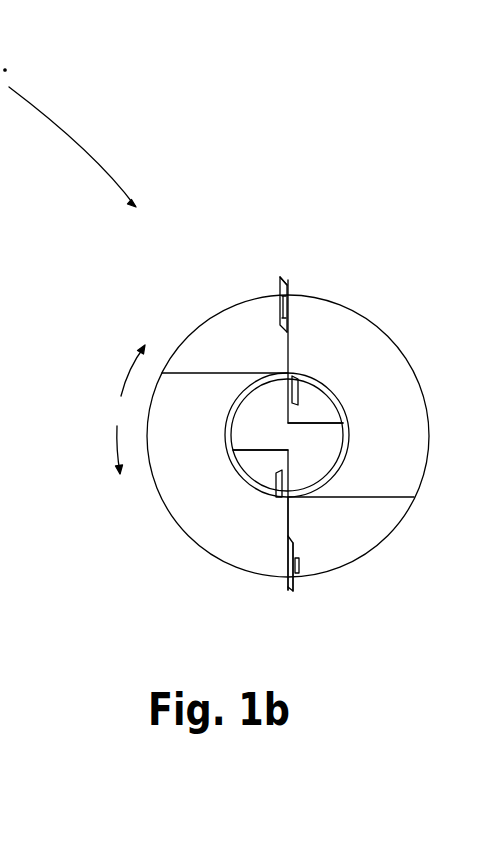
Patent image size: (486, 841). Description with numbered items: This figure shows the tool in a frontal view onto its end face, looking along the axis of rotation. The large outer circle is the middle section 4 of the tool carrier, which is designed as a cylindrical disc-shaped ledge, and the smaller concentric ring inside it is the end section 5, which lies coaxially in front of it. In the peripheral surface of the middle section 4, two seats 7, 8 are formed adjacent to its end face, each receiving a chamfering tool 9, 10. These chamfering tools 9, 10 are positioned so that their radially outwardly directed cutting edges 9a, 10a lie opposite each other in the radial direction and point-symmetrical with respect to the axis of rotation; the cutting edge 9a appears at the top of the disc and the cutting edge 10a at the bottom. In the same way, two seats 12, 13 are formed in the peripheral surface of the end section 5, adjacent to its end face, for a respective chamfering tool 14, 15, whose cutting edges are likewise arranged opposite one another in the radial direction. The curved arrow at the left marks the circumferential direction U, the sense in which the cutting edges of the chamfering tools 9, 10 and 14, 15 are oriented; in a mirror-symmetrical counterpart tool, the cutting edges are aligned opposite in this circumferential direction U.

The middle section 4 is at (348, 335).
The end section 5 is at (253, 423).
The seat 7 is at (284, 338).
The seat 8 is at (298, 523).
The chamfering tool 9 is at (278, 318).
The cutting edge 9a is at (281, 278).
The chamfering tool 10 is at (288, 541).
The cutting edge 10a is at (296, 592).
The seat 12 is at (305, 410).
The seat 13 is at (265, 464).
The chamfering tool 14 is at (294, 375).
The chamfering tool 15 is at (283, 493).
The circumferential direction U is at (127, 409).